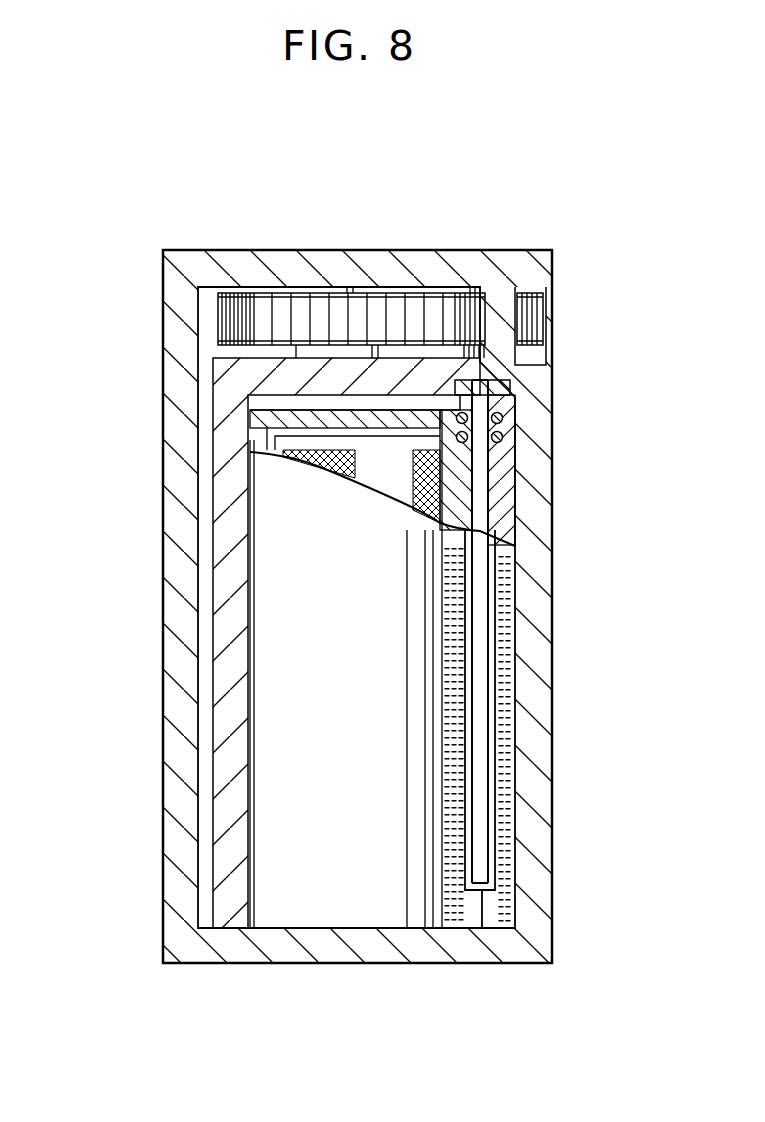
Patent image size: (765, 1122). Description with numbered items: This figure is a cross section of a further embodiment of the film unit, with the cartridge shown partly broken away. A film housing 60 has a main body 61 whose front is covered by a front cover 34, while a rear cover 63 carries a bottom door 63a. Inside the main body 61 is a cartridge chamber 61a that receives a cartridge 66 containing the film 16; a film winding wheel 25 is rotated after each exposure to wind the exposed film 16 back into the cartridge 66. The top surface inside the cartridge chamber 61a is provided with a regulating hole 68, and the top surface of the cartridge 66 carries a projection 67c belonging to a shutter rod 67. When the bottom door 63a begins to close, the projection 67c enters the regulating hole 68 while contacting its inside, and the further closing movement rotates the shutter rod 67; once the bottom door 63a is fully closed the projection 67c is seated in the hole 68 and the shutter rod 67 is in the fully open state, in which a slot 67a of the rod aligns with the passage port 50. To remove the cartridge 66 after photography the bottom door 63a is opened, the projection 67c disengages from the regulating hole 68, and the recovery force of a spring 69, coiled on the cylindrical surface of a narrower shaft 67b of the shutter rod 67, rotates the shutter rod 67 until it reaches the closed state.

The film housing 60 is at (355, 228).
The main body 61 is at (230, 387).
The cartridge chamber 61a is at (330, 398).
The regulating hole 68 is at (456, 396).
The film winding wheel 25 is at (541, 303).
The projection 67c is at (522, 391).
The narrower shaft 67b is at (506, 425).
The spring 69 is at (500, 441).
The rear cover 63 is at (543, 487).
The bottom door 63a is at (250, 953).
The shutter rod 67 is at (512, 517).
The slot 67a is at (498, 746).
The film 16 is at (337, 473).
The front cover 34 is at (165, 594).
The cartridge 66 is at (268, 677).
The passage port 50 is at (498, 668).